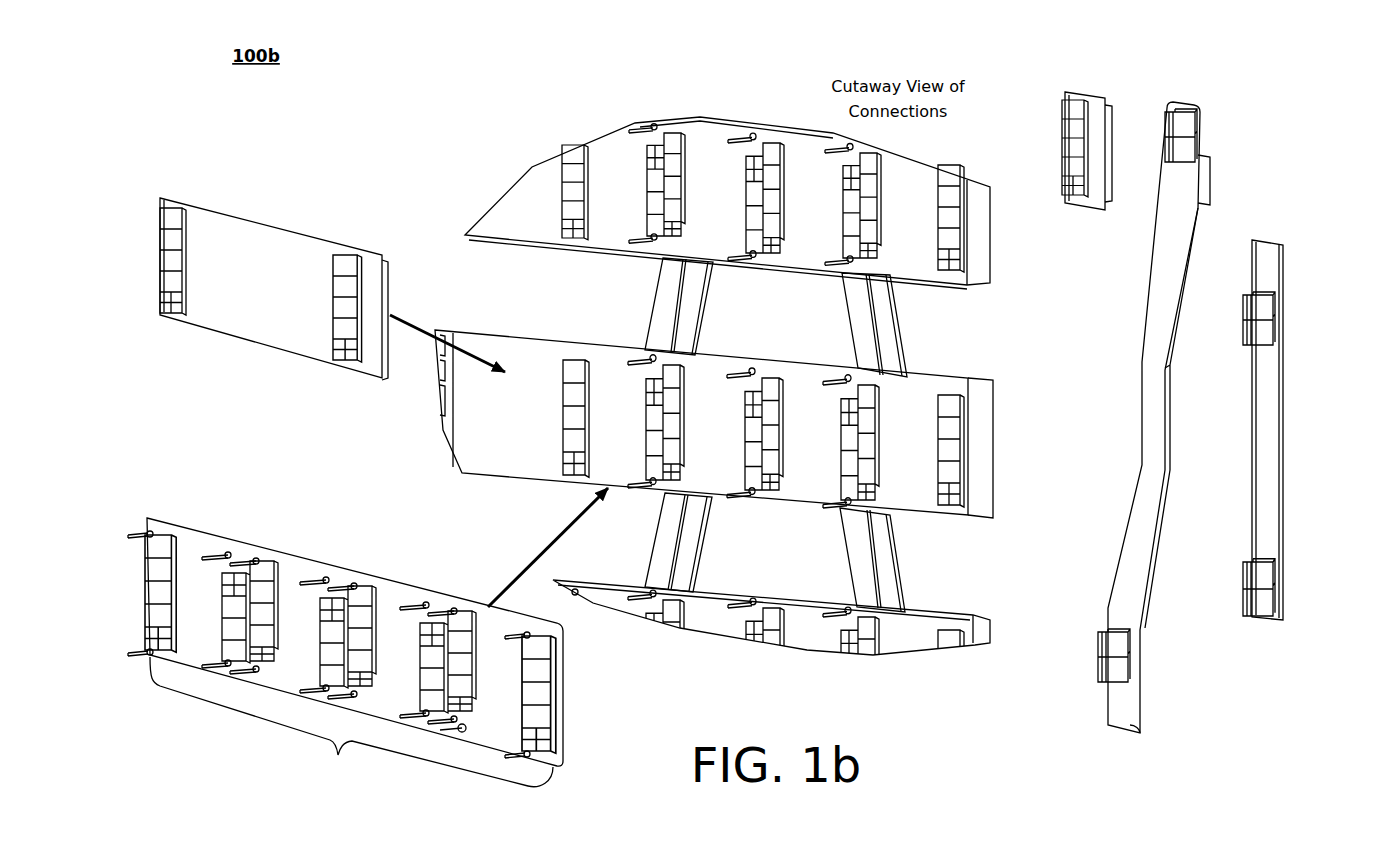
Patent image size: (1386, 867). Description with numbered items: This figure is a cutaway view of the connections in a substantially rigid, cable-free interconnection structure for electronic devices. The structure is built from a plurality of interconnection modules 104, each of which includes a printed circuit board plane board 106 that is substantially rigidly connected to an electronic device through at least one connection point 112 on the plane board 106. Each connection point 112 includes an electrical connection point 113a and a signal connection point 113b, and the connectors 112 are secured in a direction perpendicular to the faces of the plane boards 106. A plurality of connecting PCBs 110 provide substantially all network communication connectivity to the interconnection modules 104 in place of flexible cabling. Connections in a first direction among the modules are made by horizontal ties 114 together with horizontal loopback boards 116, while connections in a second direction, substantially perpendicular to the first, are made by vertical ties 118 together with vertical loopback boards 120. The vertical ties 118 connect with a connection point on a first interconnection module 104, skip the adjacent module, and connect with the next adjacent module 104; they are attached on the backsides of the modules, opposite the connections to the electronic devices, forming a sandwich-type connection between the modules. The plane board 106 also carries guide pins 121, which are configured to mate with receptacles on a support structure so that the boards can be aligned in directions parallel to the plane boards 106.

The interconnection module 104 is at (377, 642).
The PCB plane board 106 is at (710, 130).
The connecting PCB 110 is at (923, 615).
The connection point 112 is at (635, 128).
The electrical connection point 113a is at (367, 687).
The signal connection point 113b is at (367, 613).
The horizontal tie 114 is at (265, 233).
The horizontal loopback board 116 is at (1078, 92).
The vertical tie 118 is at (1197, 227).
The vertical loopback board 120 is at (1268, 470).
The guide pin 121 is at (462, 728).